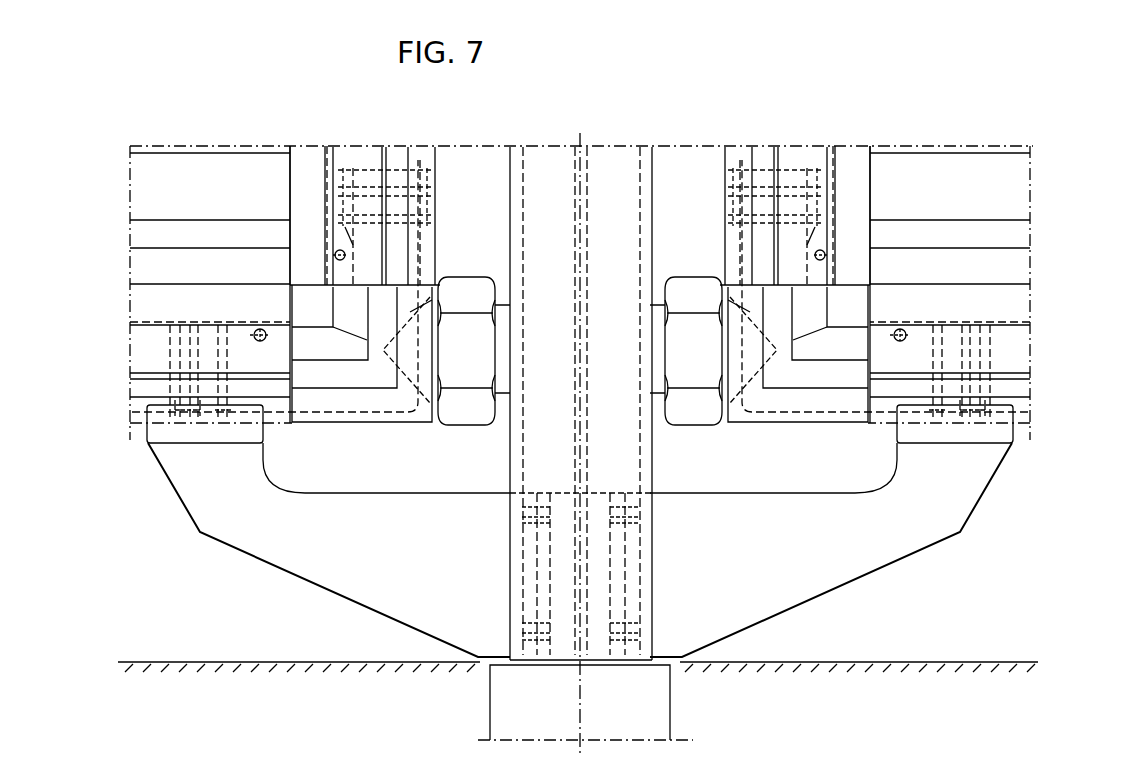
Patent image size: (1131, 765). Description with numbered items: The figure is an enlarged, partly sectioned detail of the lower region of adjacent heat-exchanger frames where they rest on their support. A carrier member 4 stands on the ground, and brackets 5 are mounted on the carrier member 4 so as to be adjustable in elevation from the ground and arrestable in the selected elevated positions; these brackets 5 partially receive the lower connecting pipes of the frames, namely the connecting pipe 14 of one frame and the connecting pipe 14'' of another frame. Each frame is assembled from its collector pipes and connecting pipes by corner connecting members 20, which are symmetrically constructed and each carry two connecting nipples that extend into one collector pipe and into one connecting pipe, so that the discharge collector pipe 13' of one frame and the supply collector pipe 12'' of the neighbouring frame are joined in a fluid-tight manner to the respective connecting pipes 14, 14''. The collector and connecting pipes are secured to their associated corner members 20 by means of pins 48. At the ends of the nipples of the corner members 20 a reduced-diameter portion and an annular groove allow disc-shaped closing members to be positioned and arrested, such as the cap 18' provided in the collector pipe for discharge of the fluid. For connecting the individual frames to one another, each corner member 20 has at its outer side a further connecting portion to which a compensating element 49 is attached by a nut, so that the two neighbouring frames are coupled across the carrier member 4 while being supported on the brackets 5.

The carrier member 4 is at (654, 455).
The bracket 5 is at (232, 548).
The supply collector pipe 12'' is at (432, 181).
The discharge collector pipe 13' is at (756, 182).
The connecting pipe 14 is at (881, 319).
The connecting pipe 14'' is at (304, 350).
The cap 18' is at (783, 152).
The corner connecting member 20 is at (375, 424).
The pin 48 is at (915, 326).
The compensating element 49 is at (503, 397).